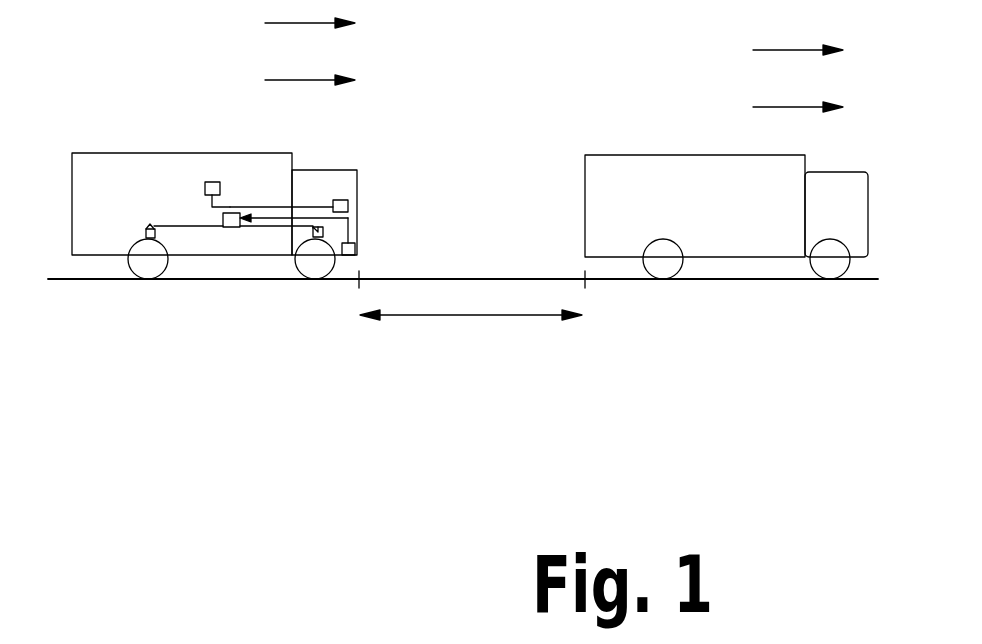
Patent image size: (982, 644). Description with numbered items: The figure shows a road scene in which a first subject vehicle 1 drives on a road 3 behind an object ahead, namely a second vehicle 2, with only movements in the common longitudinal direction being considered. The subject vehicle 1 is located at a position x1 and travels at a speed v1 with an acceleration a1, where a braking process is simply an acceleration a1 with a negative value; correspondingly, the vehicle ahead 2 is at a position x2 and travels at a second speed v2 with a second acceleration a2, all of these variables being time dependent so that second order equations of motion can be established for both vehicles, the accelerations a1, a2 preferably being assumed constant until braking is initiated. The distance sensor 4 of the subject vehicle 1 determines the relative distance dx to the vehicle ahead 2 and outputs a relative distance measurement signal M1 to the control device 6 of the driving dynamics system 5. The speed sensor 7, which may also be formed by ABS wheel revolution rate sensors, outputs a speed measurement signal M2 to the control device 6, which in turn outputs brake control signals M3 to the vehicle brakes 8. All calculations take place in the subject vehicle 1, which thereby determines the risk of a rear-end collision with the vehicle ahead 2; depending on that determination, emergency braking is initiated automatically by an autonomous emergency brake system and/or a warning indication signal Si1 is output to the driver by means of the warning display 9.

The first subject vehicle 1 is at (78, 153).
The second vehicle ahead 2 is at (593, 155).
The road 3 is at (473, 278).
The distance sensor 4 is at (358, 240).
The driving dynamics system 5 is at (165, 185).
The control device 6 is at (232, 228).
The speed sensor 7 is at (205, 182).
The vehicle brakes 8 is at (145, 230).
The warning display 9 is at (350, 204).
The relative distance measurement signal M1 is at (315, 207).
The speed measurement signal M2 is at (230, 213).
The brake control signals M3 is at (202, 226).
The warning indication signal Si1 is at (338, 200).
The acceleration of the first subject vehicle a1 is at (287, 22).
The speed of the first subject vehicle v1 is at (285, 79).
The second acceleration a2 is at (770, 52).
The second speed v2 is at (770, 102).
The position of the first subject vehicle x1 is at (357, 285).
The position of the second vehicle ahead x2 is at (588, 285).
The relative distance dx is at (471, 340).